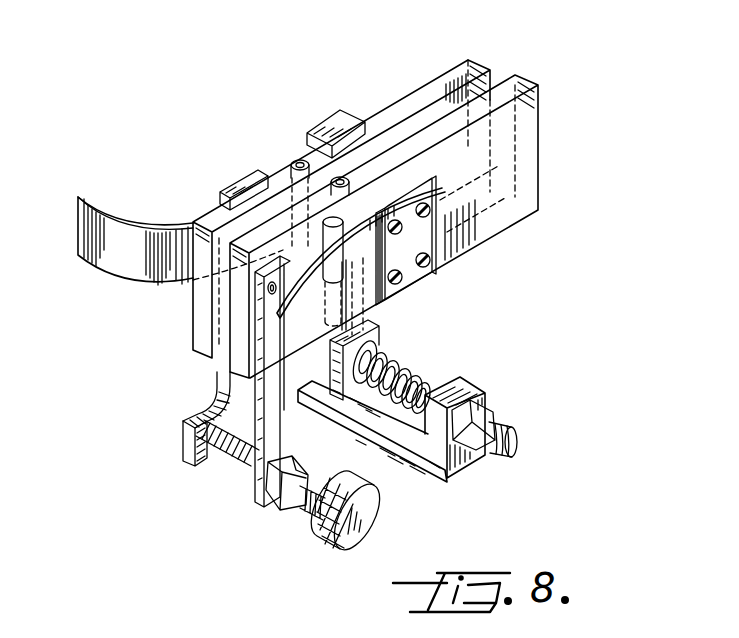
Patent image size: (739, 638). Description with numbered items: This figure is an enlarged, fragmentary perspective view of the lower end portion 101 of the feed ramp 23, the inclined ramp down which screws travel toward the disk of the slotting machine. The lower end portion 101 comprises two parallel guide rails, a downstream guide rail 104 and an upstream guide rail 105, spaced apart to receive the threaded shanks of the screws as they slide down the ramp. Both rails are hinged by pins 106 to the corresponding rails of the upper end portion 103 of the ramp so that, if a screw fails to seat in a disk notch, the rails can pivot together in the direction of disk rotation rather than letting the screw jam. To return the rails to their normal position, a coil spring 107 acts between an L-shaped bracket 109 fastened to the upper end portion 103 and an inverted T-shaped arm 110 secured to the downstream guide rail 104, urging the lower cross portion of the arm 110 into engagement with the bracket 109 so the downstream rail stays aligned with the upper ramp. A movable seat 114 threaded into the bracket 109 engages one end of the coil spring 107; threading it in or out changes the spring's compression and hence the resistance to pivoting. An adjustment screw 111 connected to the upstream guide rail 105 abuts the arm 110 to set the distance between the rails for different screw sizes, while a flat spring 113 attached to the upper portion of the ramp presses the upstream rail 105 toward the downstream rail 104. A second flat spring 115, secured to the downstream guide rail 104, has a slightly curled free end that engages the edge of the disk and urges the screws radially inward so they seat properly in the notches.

The feed ramp 23 is at (533, 238).
The lower end portion 101 is at (200, 212).
The upper end portion 103 is at (410, 81).
The downstream guide rail 104 is at (453, 68).
The upstream guide rail 105 is at (530, 78).
The pins 106 is at (338, 180).
The coil spring 107 is at (397, 360).
The L-shaped bracket 109 is at (474, 388).
The inverted T-shaped arm 110 is at (183, 442).
The adjustment screw 111 is at (243, 467).
The flat spring 113 is at (300, 394).
The movable seat 114 is at (500, 435).
The flat spring 115 is at (105, 268).